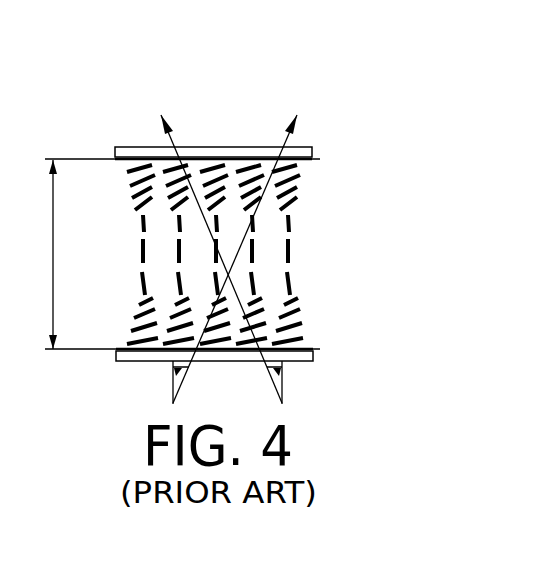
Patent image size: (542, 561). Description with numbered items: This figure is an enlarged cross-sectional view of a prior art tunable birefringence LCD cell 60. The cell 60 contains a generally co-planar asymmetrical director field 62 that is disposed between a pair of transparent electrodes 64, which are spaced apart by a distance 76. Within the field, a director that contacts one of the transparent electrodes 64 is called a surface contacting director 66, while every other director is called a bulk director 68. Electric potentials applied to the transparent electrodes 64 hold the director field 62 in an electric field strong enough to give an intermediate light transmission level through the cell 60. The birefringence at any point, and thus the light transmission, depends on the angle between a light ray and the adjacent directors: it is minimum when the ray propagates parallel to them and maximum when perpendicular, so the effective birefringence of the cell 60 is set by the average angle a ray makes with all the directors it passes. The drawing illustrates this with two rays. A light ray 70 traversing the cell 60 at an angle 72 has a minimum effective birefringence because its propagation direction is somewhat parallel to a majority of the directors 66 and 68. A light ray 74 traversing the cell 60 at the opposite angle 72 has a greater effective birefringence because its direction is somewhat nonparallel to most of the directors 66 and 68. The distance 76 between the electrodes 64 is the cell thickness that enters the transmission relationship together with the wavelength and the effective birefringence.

The tunable birefringence LCD cell 60 is at (60, 376).
The asymmetrical director field 62 is at (322, 244).
The transparent electrodes 64 is at (313, 153).
The surface contacting director 66 is at (133, 167).
The bulk director 68 is at (142, 253).
The light ray 70 is at (284, 142).
The angle 72 is at (173, 376).
The light ray 74 is at (171, 139).
The distance 76 is at (52, 293).